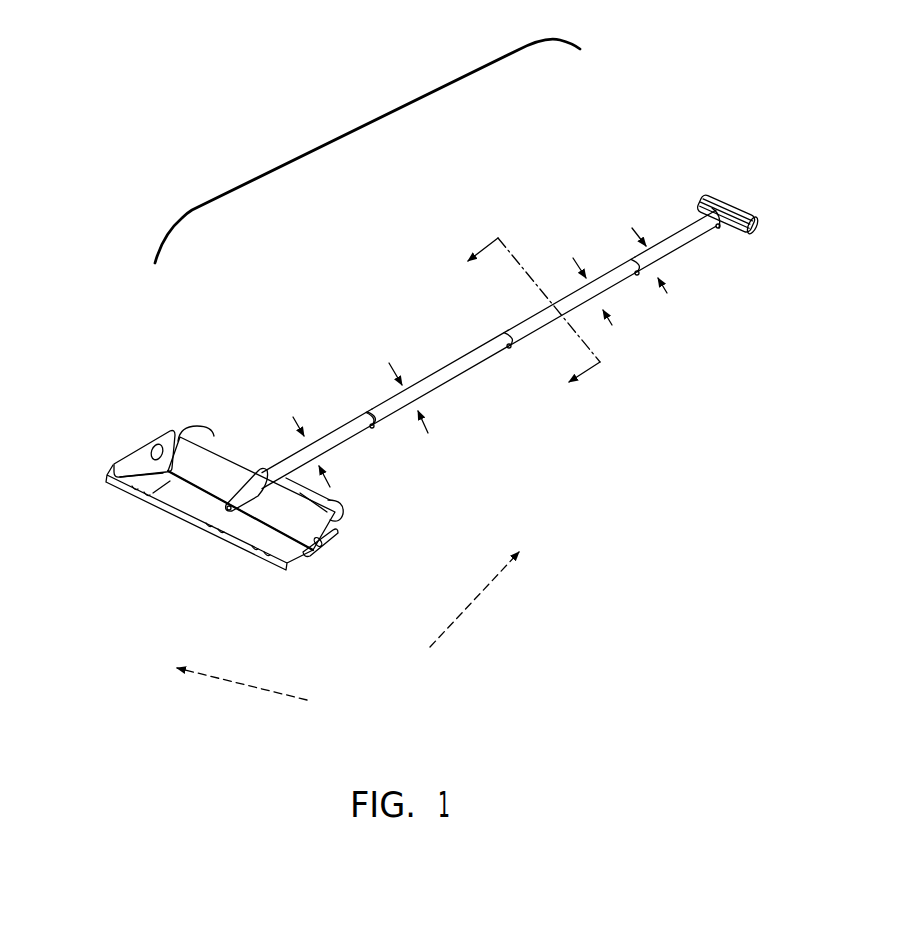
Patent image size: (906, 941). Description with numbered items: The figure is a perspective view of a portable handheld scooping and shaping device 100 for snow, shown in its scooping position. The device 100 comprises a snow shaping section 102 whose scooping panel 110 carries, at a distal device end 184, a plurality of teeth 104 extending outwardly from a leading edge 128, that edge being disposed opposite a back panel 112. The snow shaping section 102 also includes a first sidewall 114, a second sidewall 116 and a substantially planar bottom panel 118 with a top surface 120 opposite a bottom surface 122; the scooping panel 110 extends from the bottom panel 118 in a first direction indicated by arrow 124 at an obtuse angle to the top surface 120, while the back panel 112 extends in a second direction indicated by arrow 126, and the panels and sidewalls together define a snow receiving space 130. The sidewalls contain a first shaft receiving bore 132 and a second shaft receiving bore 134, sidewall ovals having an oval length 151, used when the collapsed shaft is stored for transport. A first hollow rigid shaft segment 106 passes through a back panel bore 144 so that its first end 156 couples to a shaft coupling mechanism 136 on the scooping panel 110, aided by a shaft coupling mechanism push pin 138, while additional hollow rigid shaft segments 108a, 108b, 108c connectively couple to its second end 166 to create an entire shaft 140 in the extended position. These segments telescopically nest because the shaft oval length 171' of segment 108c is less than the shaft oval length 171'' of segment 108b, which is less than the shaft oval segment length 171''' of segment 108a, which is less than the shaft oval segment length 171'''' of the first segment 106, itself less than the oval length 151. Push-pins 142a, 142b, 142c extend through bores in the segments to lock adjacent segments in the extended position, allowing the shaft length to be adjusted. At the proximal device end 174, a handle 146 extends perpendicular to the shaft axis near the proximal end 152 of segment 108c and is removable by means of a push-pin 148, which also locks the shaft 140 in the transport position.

The portable handheld scooping and shaping device 100 is at (186, 80).
The snow shaping section 102 is at (193, 416).
The teeth 104 is at (120, 479).
The first hollow rigid shaft segment 106 is at (343, 424).
The additional hollow rigid shaft segment 108a is at (438, 373).
The additional hollow rigid shaft segment 108b is at (563, 307).
The additional hollow rigid shaft segment 108c is at (672, 240).
The scooping panel 110 is at (258, 562).
The back panel 112 is at (338, 503).
The first sidewall 114 is at (118, 452).
The second sidewall 116 is at (285, 563).
The bottom panel 118 is at (272, 540).
The top surface 120 is at (168, 487).
The bottom surface 122 is at (164, 516).
The arrow 124 is at (250, 688).
The arrow 126 is at (458, 620).
The leading edge 128 is at (222, 518).
The snow receiving space 130 is at (192, 492).
The first shaft receiving bore 132 is at (151, 440).
The second shaft receiving bore 134 is at (313, 548).
The shaft coupling mechanism 136 is at (167, 532).
The shaft coupling mechanism push pin 138 is at (240, 482).
The entire shaft 140 is at (355, 128).
The push-pin 142a is at (374, 429).
The push-pin 142b is at (510, 349).
The push-pin 142c is at (638, 276).
The back panel bore 144 is at (322, 472).
The handle 146 is at (743, 215).
The push-pin 148 is at (719, 229).
The oval length 151 is at (154, 481).
The proximal end 152 is at (730, 224).
The first end 156 is at (228, 472).
The second end 166 is at (366, 411).
The shaft oval length 171' is at (641, 246).
The shaft oval length 171'' is at (584, 277).
The shaft oval segment length 171''' is at (398, 386).
The shaft oval segment length 171'''' is at (299, 439).
The proximal device end 174 is at (718, 201).
The distal device end 184 is at (95, 466).